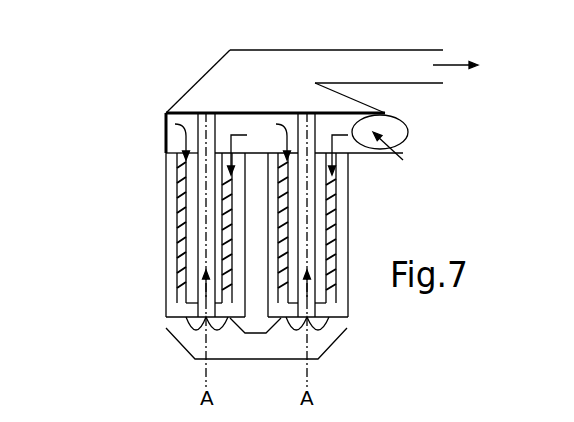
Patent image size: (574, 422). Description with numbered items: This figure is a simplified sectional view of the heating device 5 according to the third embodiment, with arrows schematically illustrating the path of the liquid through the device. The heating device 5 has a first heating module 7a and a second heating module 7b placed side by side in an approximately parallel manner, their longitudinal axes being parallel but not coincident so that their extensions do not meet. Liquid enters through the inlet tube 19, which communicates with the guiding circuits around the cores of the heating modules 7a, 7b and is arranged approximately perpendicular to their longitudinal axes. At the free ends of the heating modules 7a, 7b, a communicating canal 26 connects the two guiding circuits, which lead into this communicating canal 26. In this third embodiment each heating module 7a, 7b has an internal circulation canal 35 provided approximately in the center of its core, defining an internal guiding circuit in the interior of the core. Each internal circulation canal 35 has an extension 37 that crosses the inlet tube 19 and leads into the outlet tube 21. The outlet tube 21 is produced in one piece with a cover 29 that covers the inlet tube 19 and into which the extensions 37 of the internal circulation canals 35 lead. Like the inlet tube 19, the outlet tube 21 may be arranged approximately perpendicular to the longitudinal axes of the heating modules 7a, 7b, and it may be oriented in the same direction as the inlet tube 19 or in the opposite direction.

The heating device 5 is at (116, 289).
The first heating module 7a is at (137, 321).
The second heating module 7b is at (342, 357).
The inlet tube 19 is at (343, 122).
The outlet tube 21 is at (408, 65).
The communicating canal 26 is at (230, 350).
The cover 29 is at (196, 101).
The internal circulation canal 35 is at (198, 215).
The extension 37 is at (166, 122).